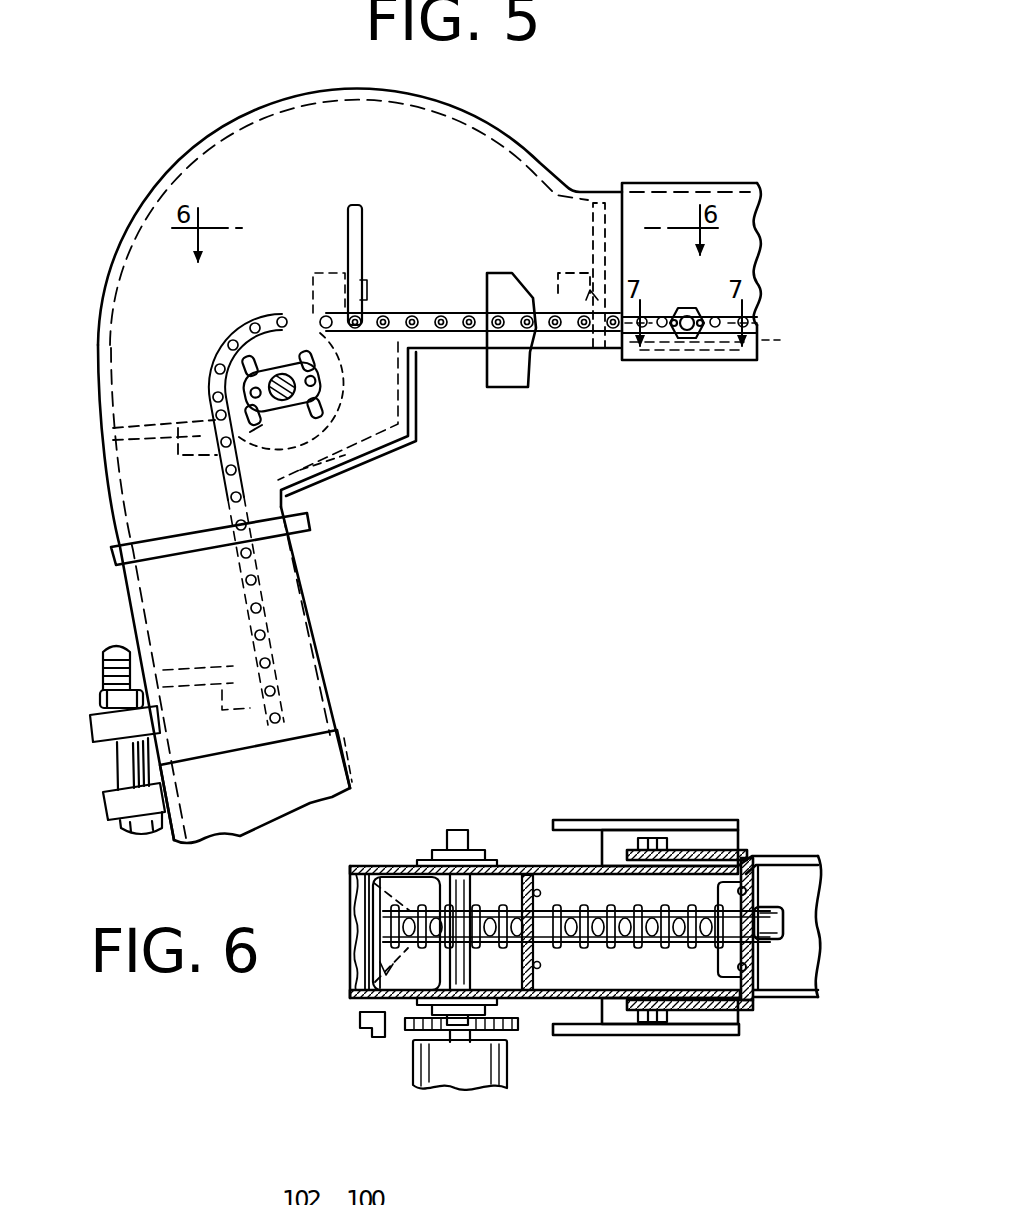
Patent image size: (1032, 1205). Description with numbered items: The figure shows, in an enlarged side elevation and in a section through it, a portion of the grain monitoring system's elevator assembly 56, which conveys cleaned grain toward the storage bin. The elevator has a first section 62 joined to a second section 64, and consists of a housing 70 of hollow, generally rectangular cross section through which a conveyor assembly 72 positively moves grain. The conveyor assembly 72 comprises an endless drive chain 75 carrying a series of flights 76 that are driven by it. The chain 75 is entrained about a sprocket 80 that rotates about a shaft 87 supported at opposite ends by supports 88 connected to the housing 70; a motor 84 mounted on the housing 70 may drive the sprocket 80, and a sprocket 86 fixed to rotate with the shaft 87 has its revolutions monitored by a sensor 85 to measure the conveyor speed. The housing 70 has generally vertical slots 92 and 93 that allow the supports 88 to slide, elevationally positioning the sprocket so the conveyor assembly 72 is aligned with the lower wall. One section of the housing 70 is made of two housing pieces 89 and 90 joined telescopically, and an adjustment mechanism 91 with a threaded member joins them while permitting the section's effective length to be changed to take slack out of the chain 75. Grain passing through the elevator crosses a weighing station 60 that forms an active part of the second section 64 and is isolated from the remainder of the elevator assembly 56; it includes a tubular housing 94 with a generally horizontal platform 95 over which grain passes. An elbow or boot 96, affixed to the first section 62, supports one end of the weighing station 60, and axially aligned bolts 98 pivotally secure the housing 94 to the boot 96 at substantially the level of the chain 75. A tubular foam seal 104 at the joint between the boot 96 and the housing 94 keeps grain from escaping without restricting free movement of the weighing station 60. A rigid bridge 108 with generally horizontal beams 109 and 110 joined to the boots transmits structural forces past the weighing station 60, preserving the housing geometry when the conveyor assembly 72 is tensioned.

In FIG. 5, the elevator assembly 56 is at (588, 121).
In FIG. 5, the weighing station 60 is at (684, 180).
In FIG. 6, the weighing station 60 is at (784, 1000).
In FIG. 5, the first section 62 is at (238, 814).
In FIG. 5, the second section 64 is at (711, 351).
In FIG. 5, the housing 70 is at (421, 409).
In FIG. 6, the housing 70 is at (386, 862).
In FIG. 5, the conveyor assembly 72 is at (424, 305).
In FIG. 6, the conveyor assembly 72 is at (648, 951).
In FIG. 5, the drive chain 75 is at (450, 316).
In FIG. 6, the drive chain 75 is at (663, 919).
In FIG. 5, the flights 76 is at (363, 241).
In FIG. 6, the flights 76 is at (535, 898).
In FIG. 5, the sprocket 80 is at (326, 458).
In FIG. 6, the sprocket 80 is at (466, 915).
In FIG. 6, the motor 84 is at (412, 1066).
In FIG. 6, the sensor 85 is at (360, 1029).
In FIG. 6, the sprocket 86 is at (516, 1031).
In FIG. 5, the shaft 87 is at (254, 382).
In FIG. 6, the shaft 87 is at (457, 832).
In FIG. 5, the supports 88 is at (276, 372).
In FIG. 6, the supports 88 is at (477, 857).
In FIG. 5, the housing piece 89 is at (293, 620).
In FIG. 5, the housing piece 90 is at (320, 760).
In FIG. 5, the adjustment mechanism 91 is at (130, 764).
In FIG. 5, the vertical slot 92 is at (334, 394).
In FIG. 5, the vertical slot 93 is at (250, 433).
In FIG. 5, the tubular housing 94 is at (742, 231).
In FIG. 6, the tubular housing 94 is at (794, 862).
In FIG. 5, the horizontal platform 95 is at (760, 340).
In FIG. 6, the horizontal platform 95 is at (797, 889).
In FIG. 5, the boot 96 is at (331, 155).
In FIG. 6, the boot 96 is at (396, 866).
In FIG. 5, the bolts 98 is at (686, 343).
In FIG. 6, the bolts 98 is at (653, 841).
In FIG. 6, the seal 104 is at (694, 857).
In FIG. 5, the rigid bridge 108 is at (513, 392).
In FIG. 6, the rigid bridge 108 is at (623, 1044).
In FIG. 5, the horizontal beam 109 is at (519, 373).
In FIG. 6, the horizontal beam 109 is at (568, 1037).
In FIG. 6, the horizontal beam 110 is at (617, 826).